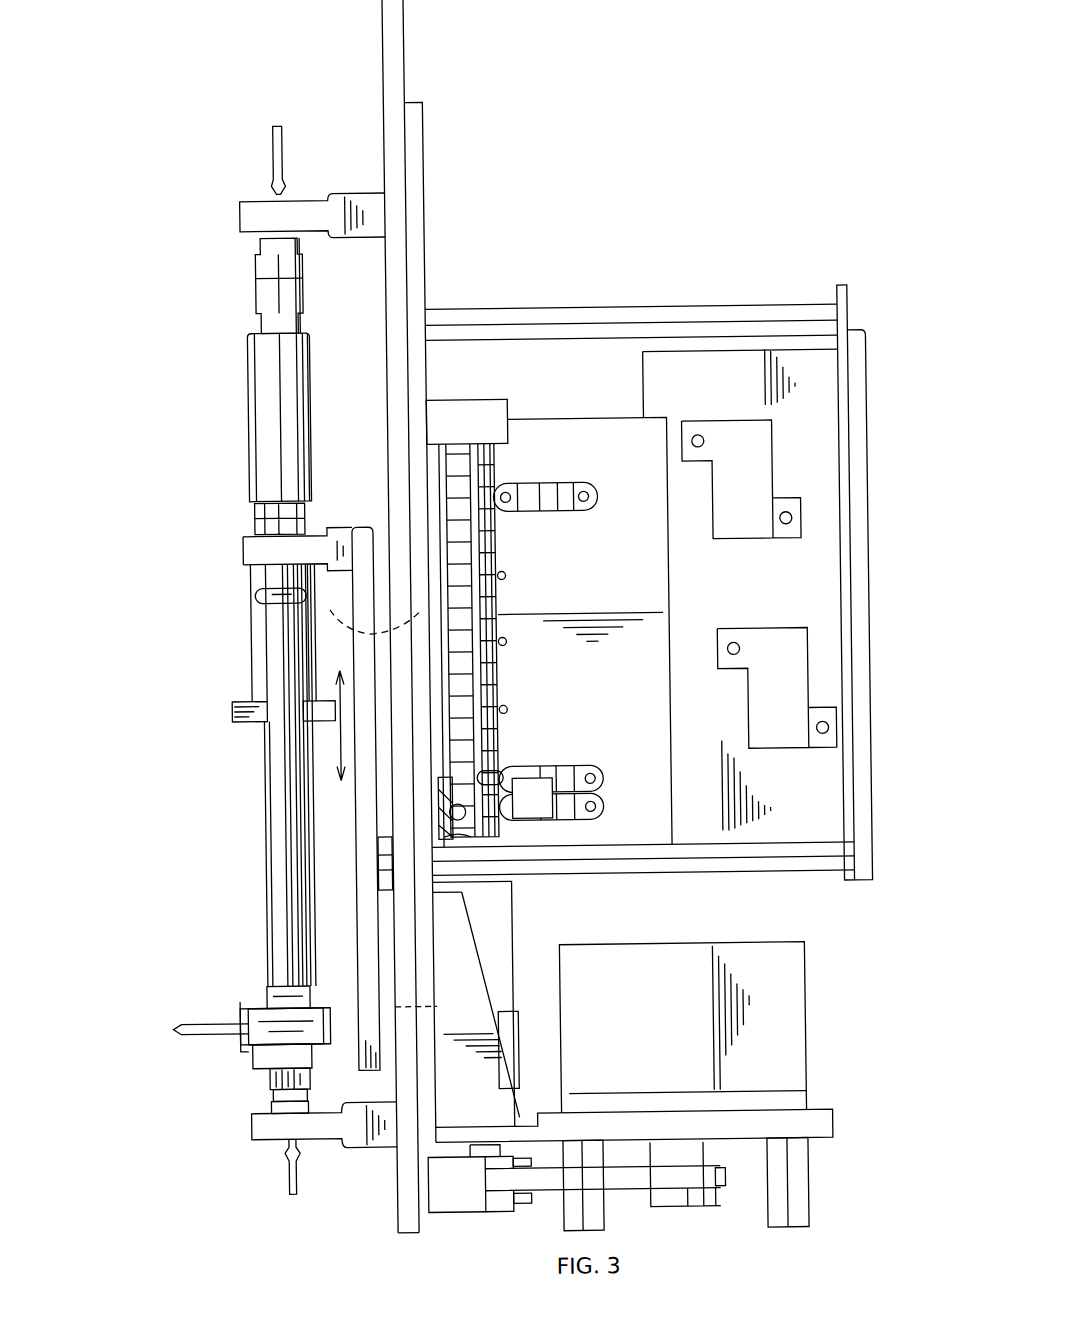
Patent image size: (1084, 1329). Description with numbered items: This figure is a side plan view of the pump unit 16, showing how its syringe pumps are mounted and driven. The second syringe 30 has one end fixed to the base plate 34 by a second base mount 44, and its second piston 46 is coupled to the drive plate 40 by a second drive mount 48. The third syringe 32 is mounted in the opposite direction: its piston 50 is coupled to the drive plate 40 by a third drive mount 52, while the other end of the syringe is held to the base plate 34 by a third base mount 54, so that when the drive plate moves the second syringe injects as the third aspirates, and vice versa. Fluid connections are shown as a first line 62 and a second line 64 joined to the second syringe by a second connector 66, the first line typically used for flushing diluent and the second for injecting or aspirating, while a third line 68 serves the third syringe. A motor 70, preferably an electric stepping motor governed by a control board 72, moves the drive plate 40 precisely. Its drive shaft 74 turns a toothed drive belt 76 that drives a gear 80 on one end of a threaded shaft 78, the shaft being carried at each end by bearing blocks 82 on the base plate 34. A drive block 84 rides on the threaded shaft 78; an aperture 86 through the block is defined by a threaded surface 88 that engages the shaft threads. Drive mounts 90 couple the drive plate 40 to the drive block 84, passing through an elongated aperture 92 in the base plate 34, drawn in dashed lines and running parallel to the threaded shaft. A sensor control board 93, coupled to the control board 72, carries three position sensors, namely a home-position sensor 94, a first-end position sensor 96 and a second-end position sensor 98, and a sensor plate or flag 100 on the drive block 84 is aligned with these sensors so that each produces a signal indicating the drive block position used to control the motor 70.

The pump unit 16 is at (571, 247).
The second syringe 30 is at (275, 826).
The third syringe 32 is at (245, 400).
The base plate 34 is at (381, 62).
The drive plate 40 is at (352, 526).
The second base mount 44 is at (242, 1128).
The second piston 46 is at (268, 632).
The second drive mount 48 is at (240, 554).
The piston 50 is at (255, 772).
The third drive mount 52 is at (250, 1052).
The third base mount 54 is at (237, 216).
The first line 62 is at (200, 1022).
The second line 64 is at (273, 1168).
The second connector 66 is at (262, 994).
The third line 68 is at (271, 152).
The motor 70 is at (757, 946).
The control board 72 is at (857, 510).
The drive shaft 74 is at (705, 1150).
The drive belt 76 is at (545, 1185).
The threaded shaft 78 is at (496, 608).
The gear 80 is at (476, 1212).
The bearing blocks 82 is at (462, 410).
The drive block 84 is at (498, 922).
The aperture 86 is at (482, 772).
The threaded surface 88 is at (440, 822).
The drive mounts 90 is at (373, 892).
The elongated aperture 92 is at (364, 613).
The sensor control board 93 is at (550, 418).
The home-position sensor 94 is at (582, 767).
The first-end position sensor 96 is at (573, 814).
The second-end position sensor 98 is at (578, 513).
The sensor plate or flag 100 is at (550, 811).